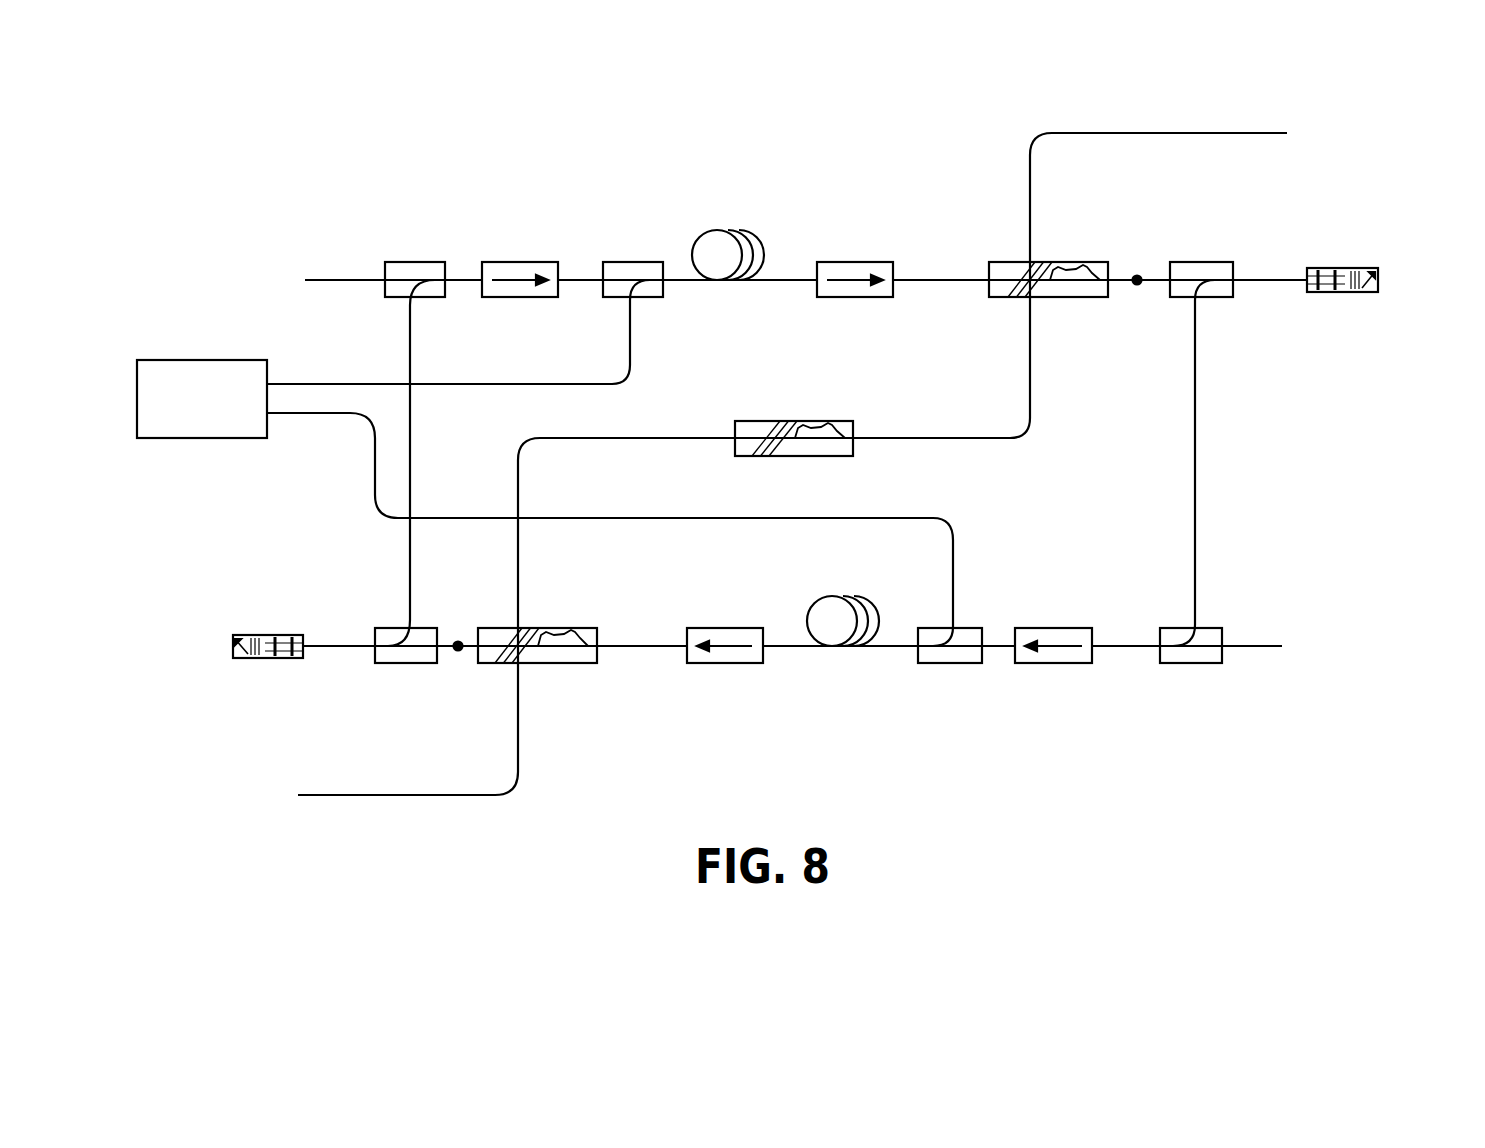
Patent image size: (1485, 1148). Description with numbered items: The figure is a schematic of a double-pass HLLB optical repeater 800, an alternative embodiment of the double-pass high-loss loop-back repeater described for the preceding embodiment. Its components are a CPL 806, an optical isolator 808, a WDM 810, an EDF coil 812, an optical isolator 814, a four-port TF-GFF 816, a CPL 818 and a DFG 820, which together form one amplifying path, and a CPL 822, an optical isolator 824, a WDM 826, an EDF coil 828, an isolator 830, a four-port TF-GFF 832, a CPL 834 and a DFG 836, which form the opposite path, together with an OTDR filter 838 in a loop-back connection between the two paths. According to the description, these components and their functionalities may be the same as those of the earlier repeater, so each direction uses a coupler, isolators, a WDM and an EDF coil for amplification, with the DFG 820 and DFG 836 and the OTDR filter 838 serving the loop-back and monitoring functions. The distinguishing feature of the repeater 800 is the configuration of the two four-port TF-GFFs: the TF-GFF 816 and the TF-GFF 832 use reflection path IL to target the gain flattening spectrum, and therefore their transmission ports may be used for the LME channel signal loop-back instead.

The double-pass HLLB optical repeater 800 is at (787, 468).
The CPL 806 is at (415, 253).
The optical isolator 808 is at (520, 310).
The WDM 810 is at (633, 255).
The EDF coil 812 is at (730, 229).
The optical isolator 814 is at (855, 309).
The 4-port TF-GFF 816 is at (1068, 252).
The CPL 818 is at (1201, 253).
The DFG 820 is at (1342, 307).
The CPL 822 is at (1191, 675).
The optical isolator 824 is at (1053, 674).
The WDM 826 is at (950, 675).
The EDF coil 828 is at (844, 595).
The isolator 830 is at (725, 674).
The 4-port TF-GFF 832 is at (557, 674).
The CPL 834 is at (406, 676).
The DFG 836 is at (268, 680).
The OTDR filter 838 is at (793, 454).